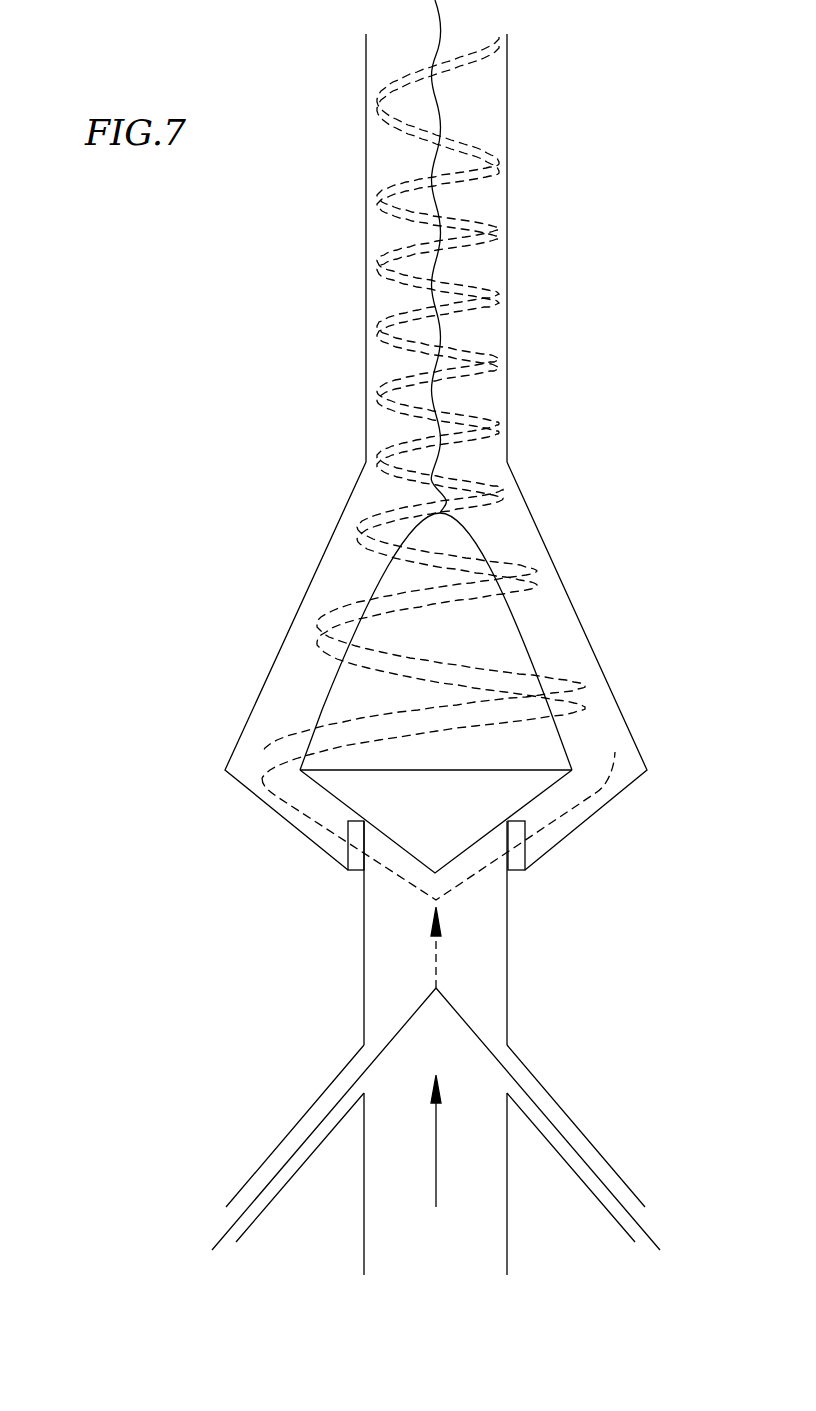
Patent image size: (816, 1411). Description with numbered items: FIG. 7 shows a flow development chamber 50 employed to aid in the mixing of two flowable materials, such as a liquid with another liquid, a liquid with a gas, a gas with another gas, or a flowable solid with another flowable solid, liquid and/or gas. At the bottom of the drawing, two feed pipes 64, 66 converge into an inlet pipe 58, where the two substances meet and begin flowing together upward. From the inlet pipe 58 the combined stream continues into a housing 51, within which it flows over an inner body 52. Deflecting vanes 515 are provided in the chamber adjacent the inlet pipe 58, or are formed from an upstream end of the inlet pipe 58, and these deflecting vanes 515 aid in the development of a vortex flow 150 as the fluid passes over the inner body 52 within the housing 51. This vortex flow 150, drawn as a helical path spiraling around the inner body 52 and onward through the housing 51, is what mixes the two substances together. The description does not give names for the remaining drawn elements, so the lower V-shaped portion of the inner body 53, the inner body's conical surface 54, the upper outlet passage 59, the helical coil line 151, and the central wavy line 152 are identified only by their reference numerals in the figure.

The flow development chamber 50 is at (620, 523).
The housing 51 is at (626, 728).
The inner body 52 is at (550, 632).
The inverted V-shaped bottom of inner cone 53 is at (505, 790).
The inner cone 54 is at (398, 556).
The inlet pipe 58 is at (508, 947).
The outlet tube 59 is at (507, 70).
The feed pipe 64 is at (303, 1117).
The feed pipe 66 is at (595, 1145).
The vortex flow 150 is at (277, 735).
The helical coil 151 is at (470, 240).
The wire / central filament 152 is at (433, 258).
The deflecting vanes 515 is at (358, 872).